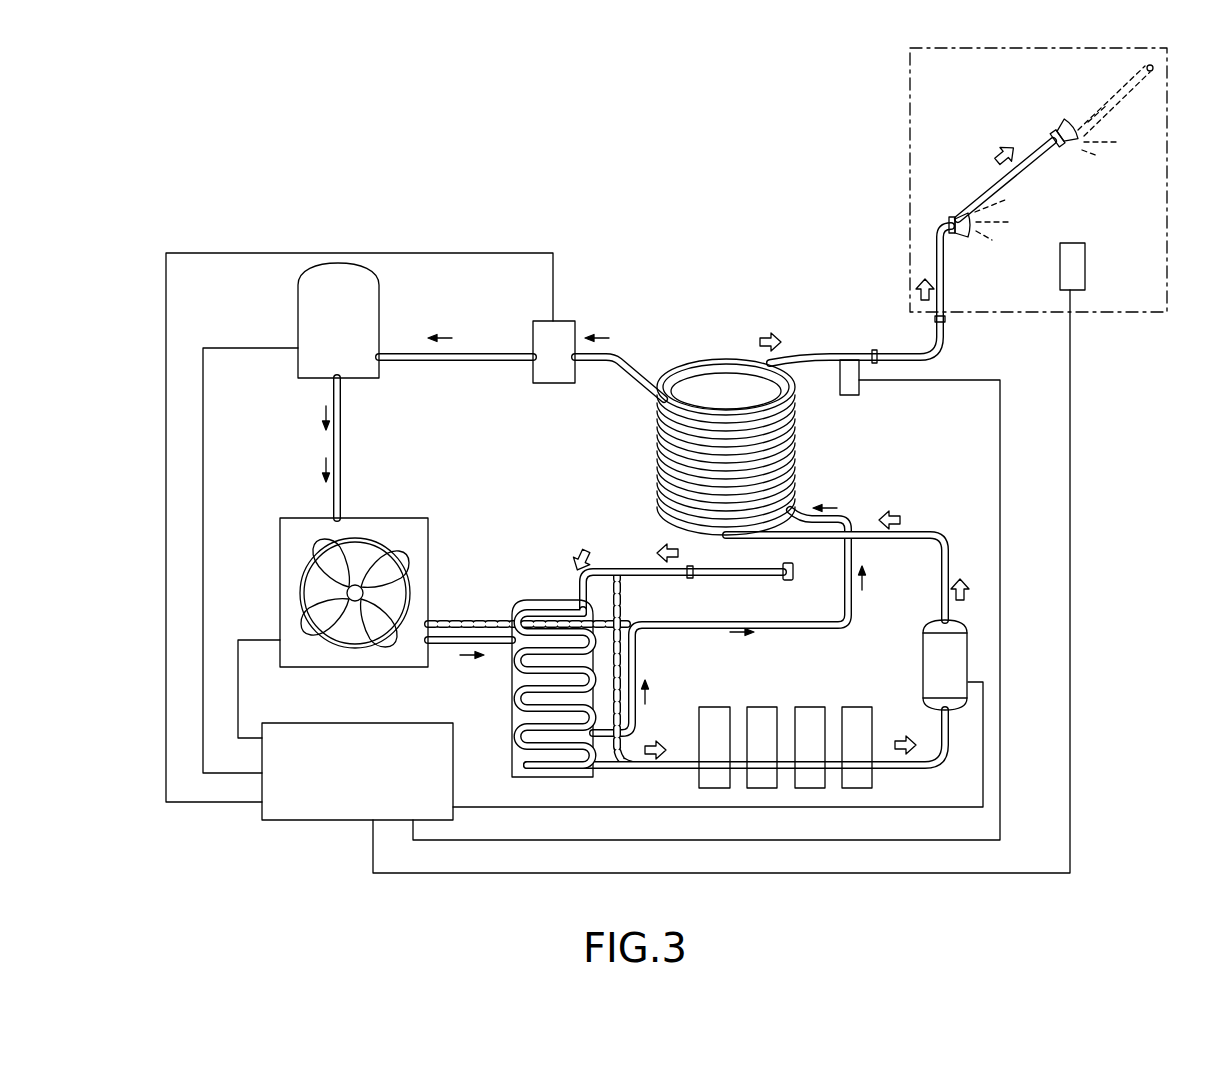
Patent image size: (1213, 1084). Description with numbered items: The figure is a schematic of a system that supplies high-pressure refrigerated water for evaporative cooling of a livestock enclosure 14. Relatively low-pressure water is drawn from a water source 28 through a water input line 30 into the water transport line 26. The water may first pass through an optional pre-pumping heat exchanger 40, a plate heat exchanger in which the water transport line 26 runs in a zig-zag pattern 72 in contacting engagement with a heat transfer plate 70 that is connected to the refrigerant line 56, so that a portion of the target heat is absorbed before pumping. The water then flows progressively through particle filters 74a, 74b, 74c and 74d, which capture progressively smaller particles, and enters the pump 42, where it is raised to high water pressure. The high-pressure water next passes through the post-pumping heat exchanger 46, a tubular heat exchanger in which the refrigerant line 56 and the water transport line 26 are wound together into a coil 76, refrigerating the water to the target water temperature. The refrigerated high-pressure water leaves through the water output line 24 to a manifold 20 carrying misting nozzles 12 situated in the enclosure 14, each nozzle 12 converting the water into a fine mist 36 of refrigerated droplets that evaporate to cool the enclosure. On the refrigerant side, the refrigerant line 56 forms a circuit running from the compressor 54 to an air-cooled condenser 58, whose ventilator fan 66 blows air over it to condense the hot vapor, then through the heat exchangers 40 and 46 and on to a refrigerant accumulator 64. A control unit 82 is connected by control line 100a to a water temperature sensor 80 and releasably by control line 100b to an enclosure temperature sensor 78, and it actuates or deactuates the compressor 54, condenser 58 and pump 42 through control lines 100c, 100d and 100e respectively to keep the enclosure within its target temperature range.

The misting nozzle 12 is at (1060, 130).
The livestock enclosure 14 is at (1105, 312).
The manifold 20 is at (985, 195).
The water output line 24 is at (915, 350).
The water transport line 26 is at (710, 356).
The water source 28 is at (790, 583).
The water input line 30 is at (735, 578).
The mist 36 is at (1112, 152).
The pre-pumping heat exchanger 40 is at (545, 600).
The pump 42 is at (957, 660).
The post-pumping heat exchanger 46 is at (640, 440).
The compressor 54 is at (380, 300).
The refrigerant line 56 is at (628, 357).
The condenser 58 is at (405, 518).
The refrigerant accumulator 64 is at (547, 383).
The ventilator fan 66 is at (300, 578).
The heat transfer plate 70 is at (512, 745).
The zig-zag pattern 72 is at (512, 700).
The particle filter 74a is at (712, 707).
The particle filter 74b is at (762, 707).
The particle filter 74c is at (810, 707).
The particle filter 74d is at (858, 707).
The coil 76 is at (797, 400).
The enclosure temperature sensor 78 is at (1072, 243).
The water temperature sensor 80 is at (865, 395).
The control unit 82 is at (318, 822).
The control line 100a is at (998, 497).
The control line 100b is at (1070, 527).
The control line 100c is at (205, 460).
The control line 100d is at (240, 690).
The control line 100e is at (985, 765).